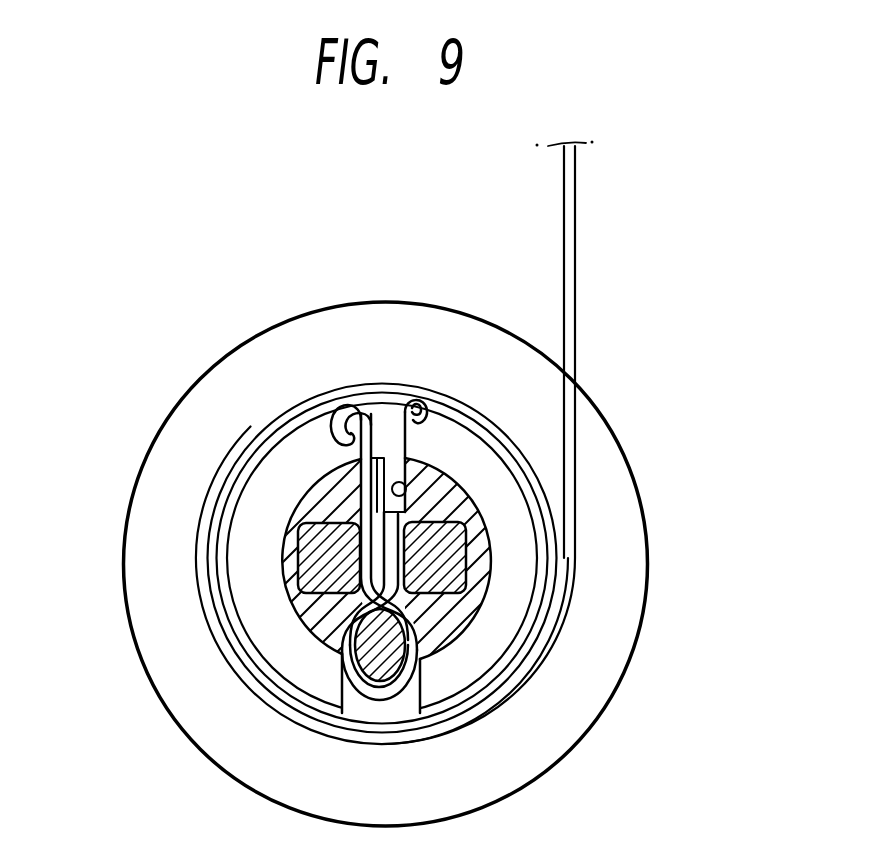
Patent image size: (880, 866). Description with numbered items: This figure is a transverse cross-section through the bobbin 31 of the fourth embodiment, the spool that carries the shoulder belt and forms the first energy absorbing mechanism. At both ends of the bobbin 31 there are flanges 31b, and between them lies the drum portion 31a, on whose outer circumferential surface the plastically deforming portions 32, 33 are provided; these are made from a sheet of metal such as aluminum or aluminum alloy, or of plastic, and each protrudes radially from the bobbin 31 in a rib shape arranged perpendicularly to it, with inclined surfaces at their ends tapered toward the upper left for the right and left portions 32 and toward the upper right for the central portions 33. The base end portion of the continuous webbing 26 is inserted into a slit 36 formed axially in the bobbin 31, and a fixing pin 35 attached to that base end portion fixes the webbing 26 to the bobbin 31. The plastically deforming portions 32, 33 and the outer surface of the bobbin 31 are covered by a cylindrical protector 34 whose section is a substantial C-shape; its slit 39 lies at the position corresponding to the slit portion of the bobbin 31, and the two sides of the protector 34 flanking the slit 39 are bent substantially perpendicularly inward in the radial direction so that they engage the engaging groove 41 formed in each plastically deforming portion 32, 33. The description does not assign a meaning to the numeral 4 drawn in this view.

The magnet 4 is at (308, 567).
The continuous webbing 26 is at (578, 350).
The bobbin 31 is at (387, 283).
The drum portion 31a is at (483, 610).
The flange 31b is at (632, 562).
The plastically deforming portion 32 is at (313, 494).
The plastically deforming portion 33 is at (445, 438).
The cylindrical protector 34 is at (392, 714).
The fixing pin 35 is at (387, 655).
The slit 36 is at (407, 480).
The slit 39 is at (402, 410).
The engaging groove 41 is at (328, 432).